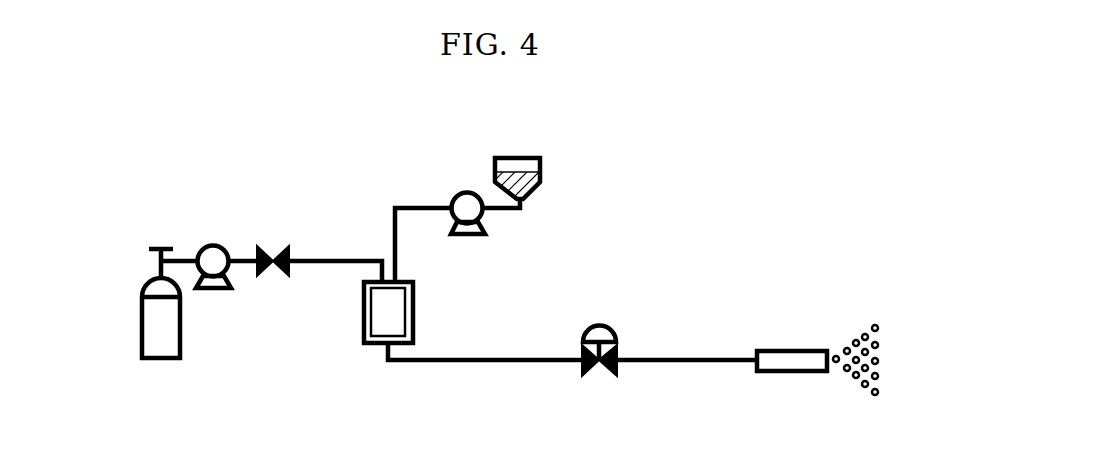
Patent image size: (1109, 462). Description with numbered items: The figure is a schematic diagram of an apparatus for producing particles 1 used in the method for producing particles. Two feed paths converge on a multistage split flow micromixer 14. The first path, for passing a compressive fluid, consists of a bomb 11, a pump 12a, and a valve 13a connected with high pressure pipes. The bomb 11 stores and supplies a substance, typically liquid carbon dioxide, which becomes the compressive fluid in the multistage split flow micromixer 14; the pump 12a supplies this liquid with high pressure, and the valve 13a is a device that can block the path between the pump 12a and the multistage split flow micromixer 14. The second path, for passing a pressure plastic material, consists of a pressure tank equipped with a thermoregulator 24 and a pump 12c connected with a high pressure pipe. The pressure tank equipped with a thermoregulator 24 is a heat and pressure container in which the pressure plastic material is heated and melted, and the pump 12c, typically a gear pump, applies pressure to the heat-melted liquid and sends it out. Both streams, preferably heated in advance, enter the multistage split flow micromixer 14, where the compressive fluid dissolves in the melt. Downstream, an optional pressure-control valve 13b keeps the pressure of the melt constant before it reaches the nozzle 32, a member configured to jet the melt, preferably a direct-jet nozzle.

The apparatus for producing particles 1 is at (660, 194).
The bomb 11 is at (142, 341).
The pump 12a is at (215, 243).
The pump 12c is at (466, 236).
The valve 13a is at (286, 247).
The pressure-control valve 13b is at (605, 327).
The multistage split flow micromixer 14 is at (362, 317).
The pressure tank equipped with a thermoregulator 24 is at (531, 158).
The nozzle 32 is at (757, 370).